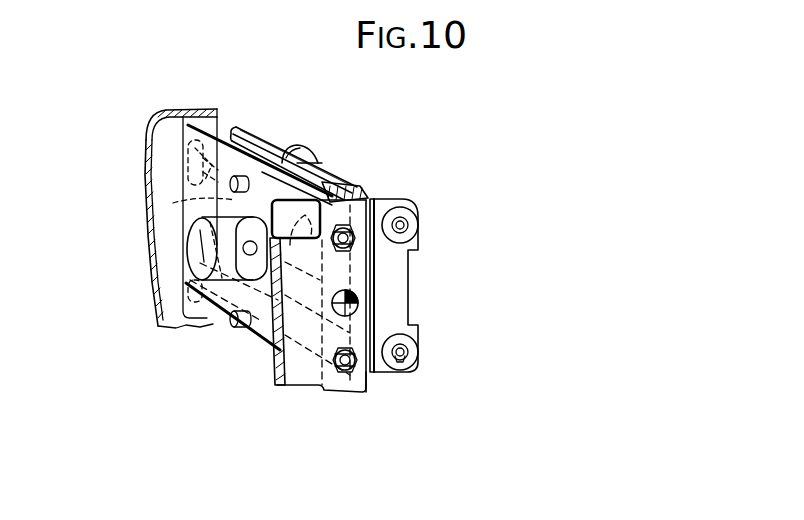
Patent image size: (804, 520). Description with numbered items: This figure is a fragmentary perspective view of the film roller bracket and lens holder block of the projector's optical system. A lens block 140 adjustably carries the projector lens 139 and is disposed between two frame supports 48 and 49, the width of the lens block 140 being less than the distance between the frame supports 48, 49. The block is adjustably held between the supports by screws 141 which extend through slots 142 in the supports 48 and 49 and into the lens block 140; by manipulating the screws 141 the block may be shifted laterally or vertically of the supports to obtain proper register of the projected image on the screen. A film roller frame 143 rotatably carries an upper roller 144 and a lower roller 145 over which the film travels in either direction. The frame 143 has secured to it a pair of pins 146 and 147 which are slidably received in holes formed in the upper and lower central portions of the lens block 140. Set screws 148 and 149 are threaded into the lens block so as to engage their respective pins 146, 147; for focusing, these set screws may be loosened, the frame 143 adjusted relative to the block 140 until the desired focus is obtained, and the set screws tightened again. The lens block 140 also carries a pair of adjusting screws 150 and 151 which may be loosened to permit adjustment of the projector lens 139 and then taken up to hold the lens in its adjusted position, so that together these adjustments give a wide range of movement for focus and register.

The frame support 48 is at (185, 108).
The frame support 49 is at (354, 189).
The projector lens 139 is at (197, 244).
The lens block 140 is at (221, 128).
The screws 141 is at (187, 157).
The slots 142 is at (178, 188).
The film roller frame 143 is at (252, 130).
The upper roller 144 is at (333, 181).
The lower roller 145 is at (408, 352).
The pin 146 is at (233, 193).
The pin 147 is at (243, 330).
The set screw 148 is at (288, 160).
The set screw 149 is at (265, 338).
The adjusting screw 150 is at (358, 306).
The adjusting screw 151 is at (173, 203).